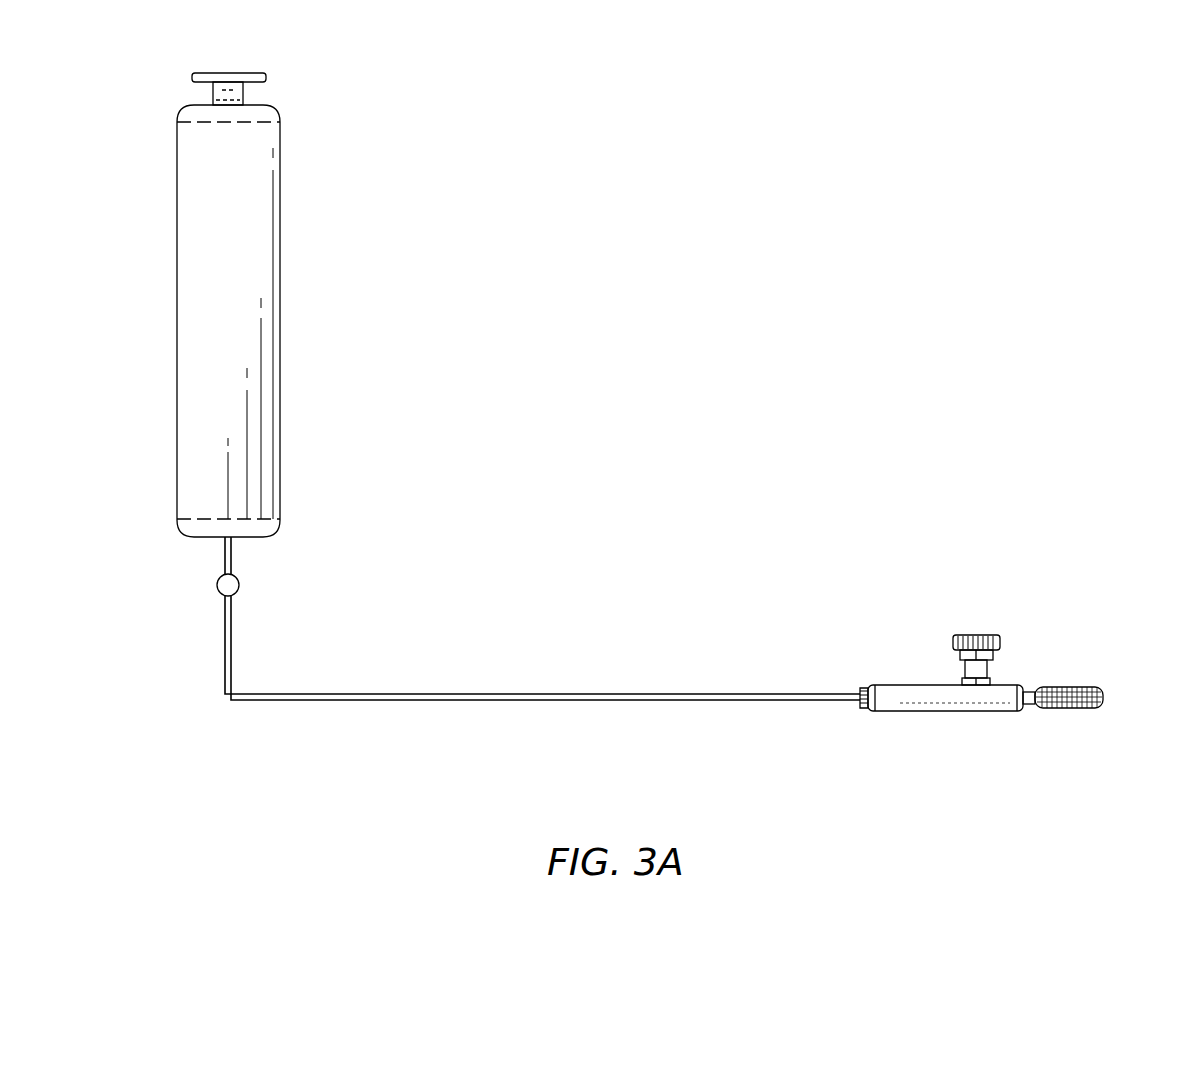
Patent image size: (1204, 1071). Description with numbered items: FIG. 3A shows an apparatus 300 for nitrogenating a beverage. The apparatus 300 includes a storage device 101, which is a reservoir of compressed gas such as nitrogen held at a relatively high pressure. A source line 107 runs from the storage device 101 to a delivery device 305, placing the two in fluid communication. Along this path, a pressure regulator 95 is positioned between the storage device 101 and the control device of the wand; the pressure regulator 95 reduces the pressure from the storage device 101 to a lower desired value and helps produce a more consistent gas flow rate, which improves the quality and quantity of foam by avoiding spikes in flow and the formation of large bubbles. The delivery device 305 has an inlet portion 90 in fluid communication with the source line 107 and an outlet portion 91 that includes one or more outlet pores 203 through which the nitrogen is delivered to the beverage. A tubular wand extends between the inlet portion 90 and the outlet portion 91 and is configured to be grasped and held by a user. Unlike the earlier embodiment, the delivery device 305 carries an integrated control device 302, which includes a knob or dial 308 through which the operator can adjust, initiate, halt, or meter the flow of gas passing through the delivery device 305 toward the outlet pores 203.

The apparatus 300 is at (872, 208).
The storage device 101 is at (282, 186).
The pressure regulator 95 is at (240, 588).
The source line 107 is at (490, 701).
The inlet portion 90 is at (868, 679).
The delivery device 305 is at (931, 712).
The control device 302 is at (1005, 667).
The knob or dial 308 is at (970, 628).
The outlet portion 91 is at (1090, 673).
The outlet pores 203 is at (1058, 712).